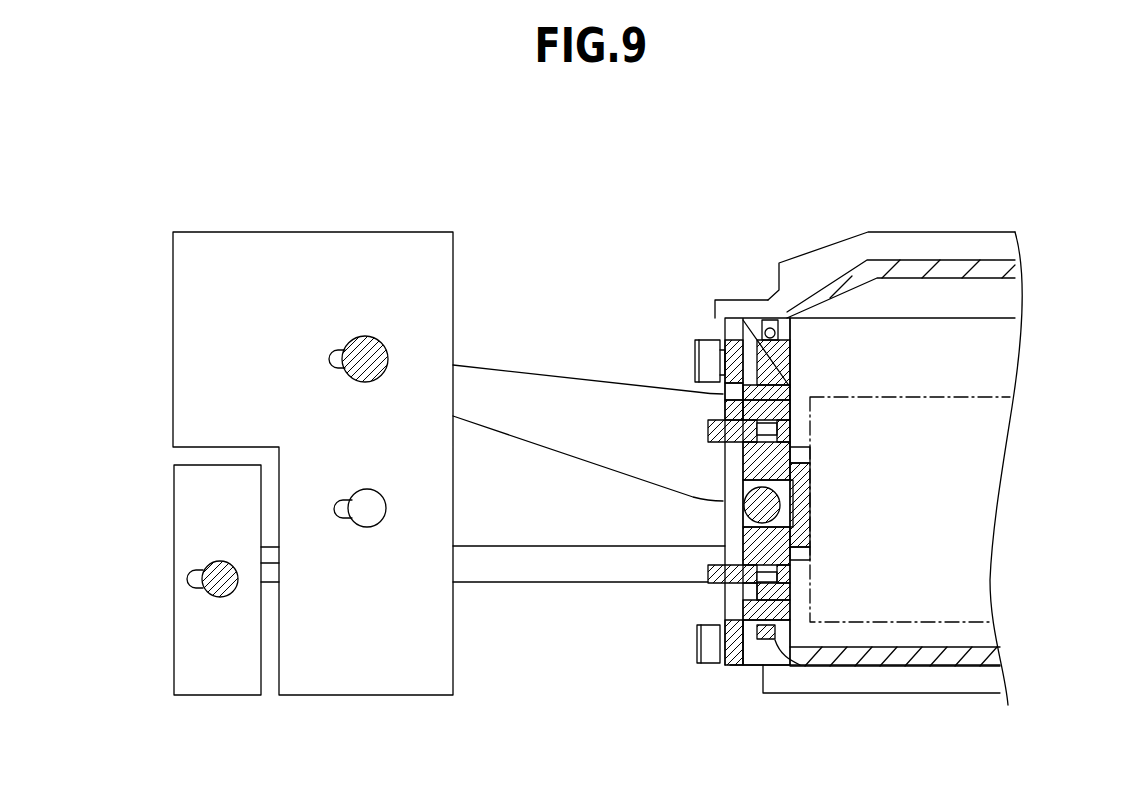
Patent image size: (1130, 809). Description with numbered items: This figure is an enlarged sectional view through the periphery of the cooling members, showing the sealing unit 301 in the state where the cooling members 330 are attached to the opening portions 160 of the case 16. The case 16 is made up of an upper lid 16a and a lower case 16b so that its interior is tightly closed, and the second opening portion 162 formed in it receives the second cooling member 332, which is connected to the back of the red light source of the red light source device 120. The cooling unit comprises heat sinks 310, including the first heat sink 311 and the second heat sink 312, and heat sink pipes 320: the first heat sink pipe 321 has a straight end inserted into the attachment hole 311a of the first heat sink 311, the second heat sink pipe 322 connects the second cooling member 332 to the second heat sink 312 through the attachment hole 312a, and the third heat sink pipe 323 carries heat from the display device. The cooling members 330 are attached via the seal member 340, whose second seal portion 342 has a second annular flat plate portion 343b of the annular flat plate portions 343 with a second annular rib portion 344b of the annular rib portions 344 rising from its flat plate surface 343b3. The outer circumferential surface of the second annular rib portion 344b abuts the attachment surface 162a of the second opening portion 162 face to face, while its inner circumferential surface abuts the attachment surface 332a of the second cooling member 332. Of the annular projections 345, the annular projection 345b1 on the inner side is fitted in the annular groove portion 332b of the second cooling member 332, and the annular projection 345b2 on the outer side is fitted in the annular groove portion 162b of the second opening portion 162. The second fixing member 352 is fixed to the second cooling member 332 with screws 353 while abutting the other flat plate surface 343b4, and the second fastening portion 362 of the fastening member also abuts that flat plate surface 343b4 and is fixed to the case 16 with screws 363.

The case 16 is at (888, 208).
The upper lid 16a is at (943, 247).
The lower case 16b is at (953, 667).
The red light source device 120 is at (927, 397).
The opening portions 160 is at (953, 484).
The second opening portion 162 is at (818, 637).
The attachment surface 162a is at (723, 395).
The annular groove portion 162b is at (790, 367).
The sealing unit 301 is at (696, 694).
The heat sinks 310 is at (253, 418).
The first heat sink 311 is at (272, 256).
The attachment hole 311a is at (376, 358).
The second heat sink 312 is at (200, 500).
The attachment hole 312a is at (205, 573).
The heat sink pipes 320 is at (397, 408).
The first heat sink pipe 321 is at (488, 407).
The second heat sink pipe 322 is at (203, 590).
The third heat sink pipe 323 is at (520, 575).
The cooling members 330 is at (930, 503).
The second cooling member 332 is at (813, 465).
The attachment surface 332a is at (790, 388).
The annular groove portion 332b is at (790, 408).
The seal member 340 is at (781, 150).
The second seal portion 342 is at (743, 318).
The annular flat plate portions 343 is at (856, 678).
The second annular flat plate portion 343b is at (742, 597).
The flat plate surface 343b3 is at (787, 596).
The flat plate surface 343b4 is at (731, 666).
The annular rib portions 344 is at (825, 678).
The second annular rib portion 344b is at (770, 623).
The annular projections 345 is at (936, 653).
The annular projection 345b1 is at (767, 590).
The annular projection 345b2 is at (777, 638).
The second fixing member 352 is at (723, 408).
The screws 353 is at (707, 425).
The second fastening portion 362 is at (730, 313).
The screws 363 is at (697, 338).